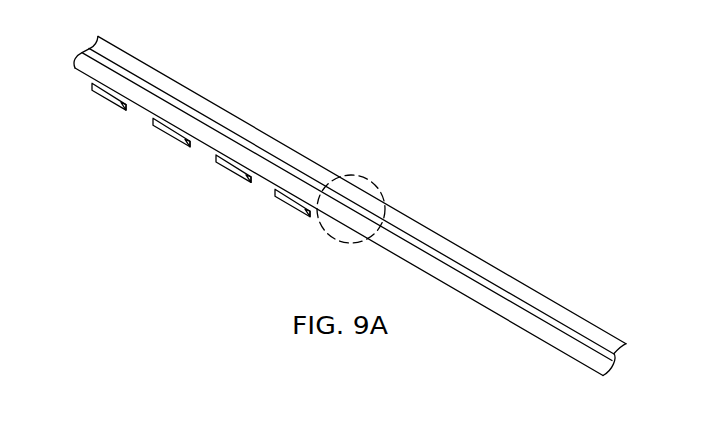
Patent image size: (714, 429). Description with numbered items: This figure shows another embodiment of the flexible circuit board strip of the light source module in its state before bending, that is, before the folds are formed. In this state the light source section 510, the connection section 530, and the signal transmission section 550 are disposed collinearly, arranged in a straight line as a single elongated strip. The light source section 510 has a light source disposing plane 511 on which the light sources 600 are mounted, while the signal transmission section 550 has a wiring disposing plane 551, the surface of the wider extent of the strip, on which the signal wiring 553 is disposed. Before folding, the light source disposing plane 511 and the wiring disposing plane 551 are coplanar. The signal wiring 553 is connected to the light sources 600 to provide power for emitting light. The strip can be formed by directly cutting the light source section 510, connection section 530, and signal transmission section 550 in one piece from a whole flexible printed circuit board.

The light source section 510 is at (203, 136).
The light source disposing plane 511 is at (143, 110).
The connection section 530 is at (357, 180).
The signal transmission section 550 is at (545, 331).
The wiring disposing plane 551 is at (517, 287).
The signal wiring 553 is at (565, 322).
The light source 600 is at (107, 97).